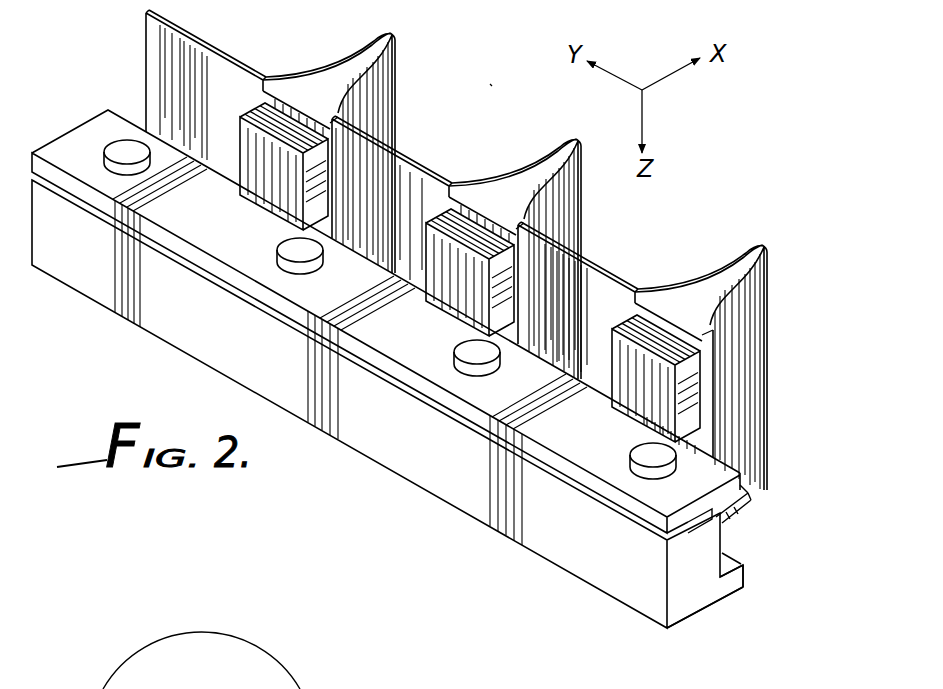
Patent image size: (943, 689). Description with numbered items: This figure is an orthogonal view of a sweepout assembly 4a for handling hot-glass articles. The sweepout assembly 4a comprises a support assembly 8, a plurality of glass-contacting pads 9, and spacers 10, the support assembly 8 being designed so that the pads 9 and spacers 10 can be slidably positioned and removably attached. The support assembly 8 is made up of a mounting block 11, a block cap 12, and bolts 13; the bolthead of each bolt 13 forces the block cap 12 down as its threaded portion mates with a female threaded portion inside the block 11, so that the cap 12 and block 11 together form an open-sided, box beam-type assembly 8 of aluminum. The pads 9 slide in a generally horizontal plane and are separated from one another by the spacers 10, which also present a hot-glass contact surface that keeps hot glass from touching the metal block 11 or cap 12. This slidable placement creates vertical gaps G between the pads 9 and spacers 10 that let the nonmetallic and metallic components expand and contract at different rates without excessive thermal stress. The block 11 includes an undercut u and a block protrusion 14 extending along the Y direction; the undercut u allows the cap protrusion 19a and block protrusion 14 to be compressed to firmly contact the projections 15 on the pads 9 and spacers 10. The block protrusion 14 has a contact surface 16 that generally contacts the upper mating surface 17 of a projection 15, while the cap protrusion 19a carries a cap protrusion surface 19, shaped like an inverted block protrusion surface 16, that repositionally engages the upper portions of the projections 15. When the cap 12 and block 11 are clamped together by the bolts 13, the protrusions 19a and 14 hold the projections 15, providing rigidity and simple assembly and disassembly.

The support assembly 8 is at (710, 628).
The glass-contacting pad 9 is at (396, 82).
The spacer 10 is at (232, 49).
The mounting block 11 is at (478, 510).
The block cap 12 is at (233, 262).
The bolt 13 is at (113, 147).
The block protrusion 14 is at (741, 588).
The projection 15 is at (240, 180).
The contact surface 16 is at (733, 557).
The upper mating surface 17 is at (256, 112).
The cap protrusion surface 19 is at (747, 497).
The cap protrusion 19a is at (742, 484).
The gap G is at (340, 114).
The sweepout assembly 4a is at (492, 80).
The undercut u is at (706, 526).